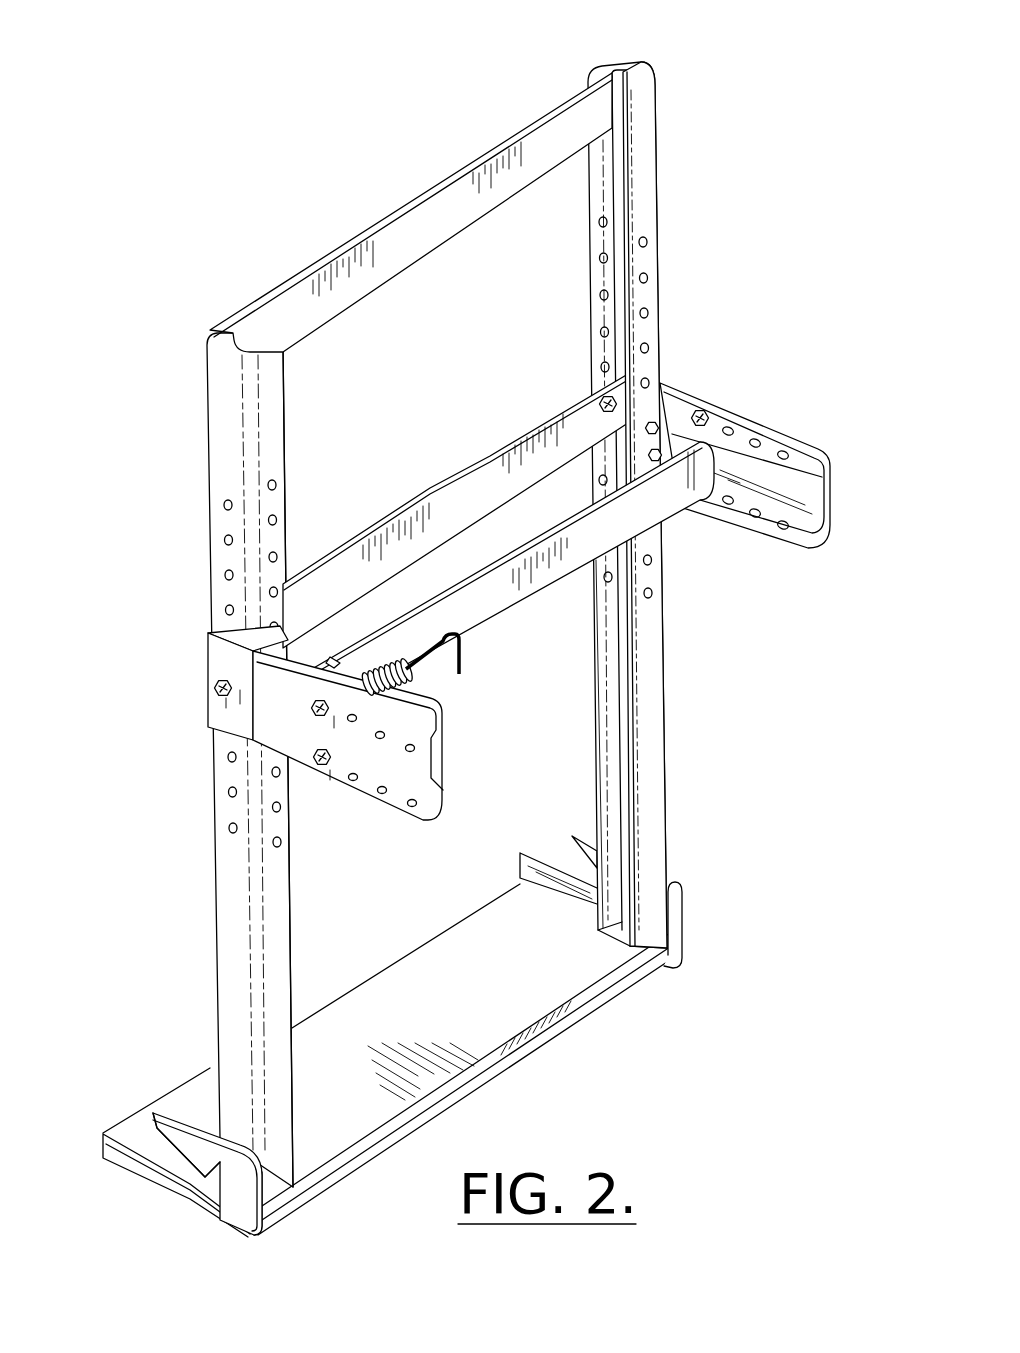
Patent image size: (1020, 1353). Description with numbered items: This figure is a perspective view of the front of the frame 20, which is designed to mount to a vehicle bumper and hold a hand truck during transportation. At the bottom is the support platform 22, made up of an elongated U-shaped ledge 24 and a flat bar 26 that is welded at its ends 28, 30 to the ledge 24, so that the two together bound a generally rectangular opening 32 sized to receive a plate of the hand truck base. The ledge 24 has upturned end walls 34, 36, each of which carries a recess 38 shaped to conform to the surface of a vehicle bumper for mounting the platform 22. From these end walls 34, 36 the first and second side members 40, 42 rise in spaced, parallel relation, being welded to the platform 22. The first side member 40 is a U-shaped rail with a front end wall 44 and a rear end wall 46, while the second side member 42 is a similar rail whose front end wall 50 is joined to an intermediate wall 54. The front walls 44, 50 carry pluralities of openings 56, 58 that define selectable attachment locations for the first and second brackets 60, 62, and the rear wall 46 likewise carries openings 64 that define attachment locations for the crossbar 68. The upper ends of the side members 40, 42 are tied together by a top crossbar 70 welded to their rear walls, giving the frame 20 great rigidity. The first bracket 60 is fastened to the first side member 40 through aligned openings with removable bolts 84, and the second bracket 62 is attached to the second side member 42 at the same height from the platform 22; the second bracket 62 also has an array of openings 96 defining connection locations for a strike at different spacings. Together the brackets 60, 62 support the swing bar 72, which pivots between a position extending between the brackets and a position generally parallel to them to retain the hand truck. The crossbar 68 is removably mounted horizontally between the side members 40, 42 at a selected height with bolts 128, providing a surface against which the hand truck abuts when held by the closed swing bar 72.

The frame 20 is at (133, 295).
The bottom support platform 22 is at (131, 1193).
The elongated U-shaped ledge 24 is at (465, 945).
The flat bar 26 is at (567, 985).
The end of flat bar 28 is at (656, 948).
The end of flat bar 30 is at (272, 1210).
The rectangular opening 32 is at (505, 1069).
The upturned end wall 34 is at (683, 900).
The upturned end wall 36 is at (228, 1195).
The recess 38 is at (128, 1112).
The first side member 40 is at (672, 801).
The second side member 42 is at (217, 972).
The front end wall 44 is at (653, 732).
The rear end wall 46 is at (620, 760).
The front end wall 50 is at (285, 905).
The intermediate wall 54 is at (235, 895).
The openings 56 is at (665, 270).
The openings 58 is at (302, 577).
The first bracket 60 is at (750, 422).
The second bracket 62 is at (445, 694).
The openings 64 is at (580, 296).
The crossbar 68 is at (455, 471).
The top crossbar 70 is at (405, 208).
The swing bar 72 is at (513, 590).
The bolts 84 is at (597, 488).
The openings 96 is at (408, 752).
The bolts 128 is at (598, 404).